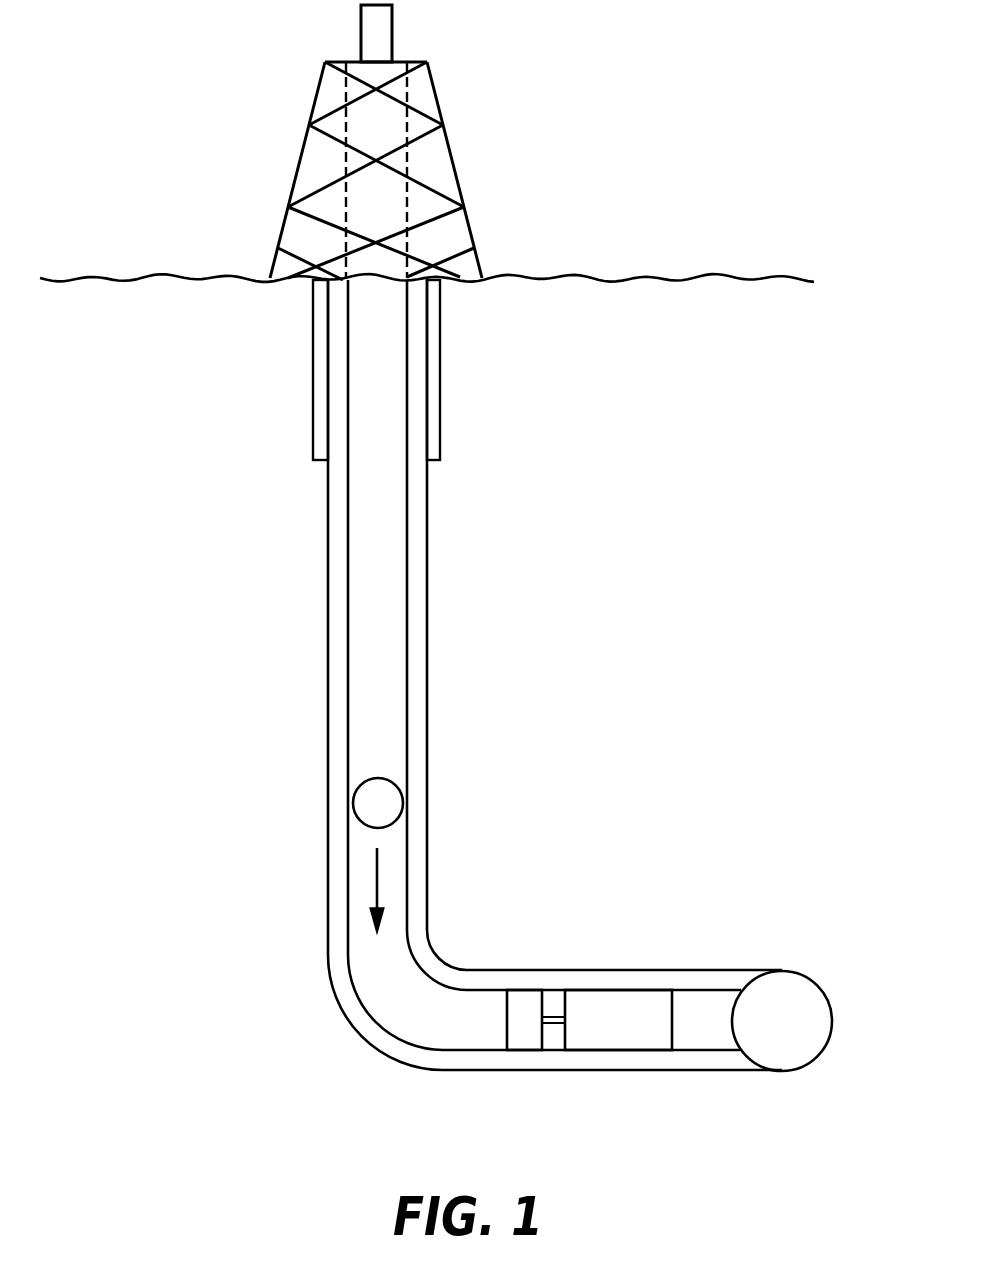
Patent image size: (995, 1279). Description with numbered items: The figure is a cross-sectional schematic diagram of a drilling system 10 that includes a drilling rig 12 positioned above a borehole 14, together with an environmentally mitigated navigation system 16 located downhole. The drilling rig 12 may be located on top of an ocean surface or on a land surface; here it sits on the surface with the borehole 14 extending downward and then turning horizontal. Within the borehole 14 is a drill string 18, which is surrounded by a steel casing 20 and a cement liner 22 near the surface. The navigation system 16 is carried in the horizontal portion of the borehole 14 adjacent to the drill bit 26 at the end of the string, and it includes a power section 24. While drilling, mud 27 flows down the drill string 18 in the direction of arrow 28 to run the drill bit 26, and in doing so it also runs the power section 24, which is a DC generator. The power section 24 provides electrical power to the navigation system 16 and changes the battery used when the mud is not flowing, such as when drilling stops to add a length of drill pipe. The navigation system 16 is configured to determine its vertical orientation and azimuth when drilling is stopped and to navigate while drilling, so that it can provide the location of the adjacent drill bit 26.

The drilling system 10 is at (615, 36).
The drilling rig 12 is at (455, 163).
The borehole 14 is at (430, 592).
The environmentally mitigated navigation system 16 is at (605, 1020).
The drill string 18 is at (407, 502).
The steel casing 20 is at (320, 365).
The cement liner 22 is at (440, 357).
The power section 24 is at (522, 1005).
The drill bit 26 is at (777, 997).
The mud 27 is at (363, 803).
The arrow 28 is at (378, 877).